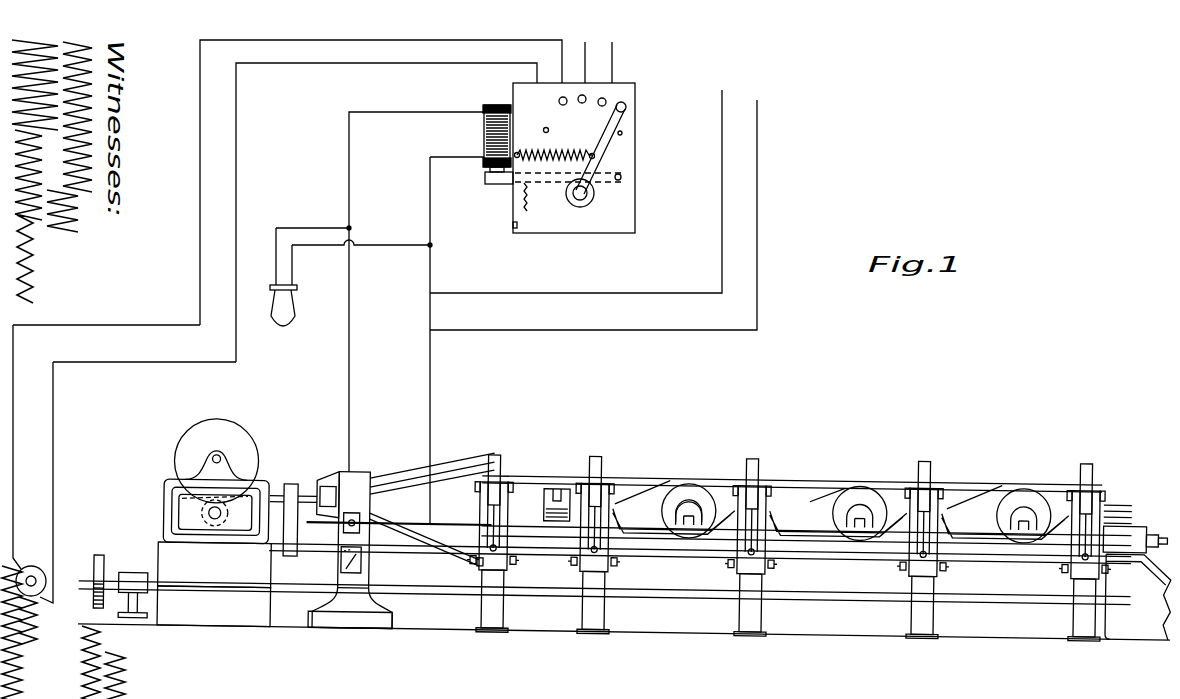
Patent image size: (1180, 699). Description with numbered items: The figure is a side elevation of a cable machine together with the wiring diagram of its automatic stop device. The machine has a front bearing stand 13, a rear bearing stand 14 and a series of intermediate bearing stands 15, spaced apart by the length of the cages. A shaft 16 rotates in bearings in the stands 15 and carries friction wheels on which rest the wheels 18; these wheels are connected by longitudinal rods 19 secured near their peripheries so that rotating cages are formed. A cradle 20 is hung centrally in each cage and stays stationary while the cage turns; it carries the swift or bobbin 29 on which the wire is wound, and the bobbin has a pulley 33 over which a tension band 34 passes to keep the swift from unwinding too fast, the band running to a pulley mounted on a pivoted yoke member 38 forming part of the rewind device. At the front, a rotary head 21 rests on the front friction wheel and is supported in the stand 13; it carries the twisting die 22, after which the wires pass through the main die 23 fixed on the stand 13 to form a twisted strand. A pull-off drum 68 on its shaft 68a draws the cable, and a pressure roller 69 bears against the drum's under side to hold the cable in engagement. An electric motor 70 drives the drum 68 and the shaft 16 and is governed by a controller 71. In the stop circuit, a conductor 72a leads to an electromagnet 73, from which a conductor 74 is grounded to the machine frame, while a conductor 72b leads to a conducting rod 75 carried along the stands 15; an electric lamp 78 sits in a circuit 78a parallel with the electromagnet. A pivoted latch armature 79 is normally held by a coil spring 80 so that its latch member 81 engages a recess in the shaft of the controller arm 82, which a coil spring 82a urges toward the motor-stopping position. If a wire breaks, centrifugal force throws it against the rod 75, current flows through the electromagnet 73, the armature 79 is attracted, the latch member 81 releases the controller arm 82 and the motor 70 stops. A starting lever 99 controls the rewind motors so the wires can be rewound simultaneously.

The front bearing stand 13 is at (374, 620).
The rear bearing stand 14 is at (1133, 628).
The intermediate bearing stands 15 is at (508, 618).
The shaft 16 is at (676, 589).
The wheels 18 is at (1090, 460).
The longitudinal rods 19 is at (537, 479).
The cradle 20 is at (674, 530).
The rotary head 21 is at (378, 478).
The twisting die 22 is at (323, 482).
The main die 23 is at (283, 487).
The swift or bobbin 29 is at (696, 498).
The pulley 33 is at (689, 497).
The tension band 34 is at (642, 498).
The yoke member 38 is at (556, 488).
The pull-off drum 68 is at (196, 437).
The shaft 68a is at (209, 464).
The pressure roller 69 is at (205, 512).
The electric motor 70 is at (42, 572).
The controller 71 is at (637, 89).
The conductor 72a is at (598, 300).
The conductor 72b is at (690, 331).
The electromagnet 73 is at (483, 136).
The conductor 74 is at (352, 311).
The rod 75 is at (455, 529).
The electric lamp 78 is at (290, 320).
The circuit 78a is at (387, 242).
The pivoted latch armature 79 is at (500, 185).
The coil spring 80 is at (508, 231).
The latch member 81 is at (590, 189).
The controller arm 82 is at (605, 147).
The coil spring 82a is at (538, 140).
The starting lever 99 is at (338, 562).